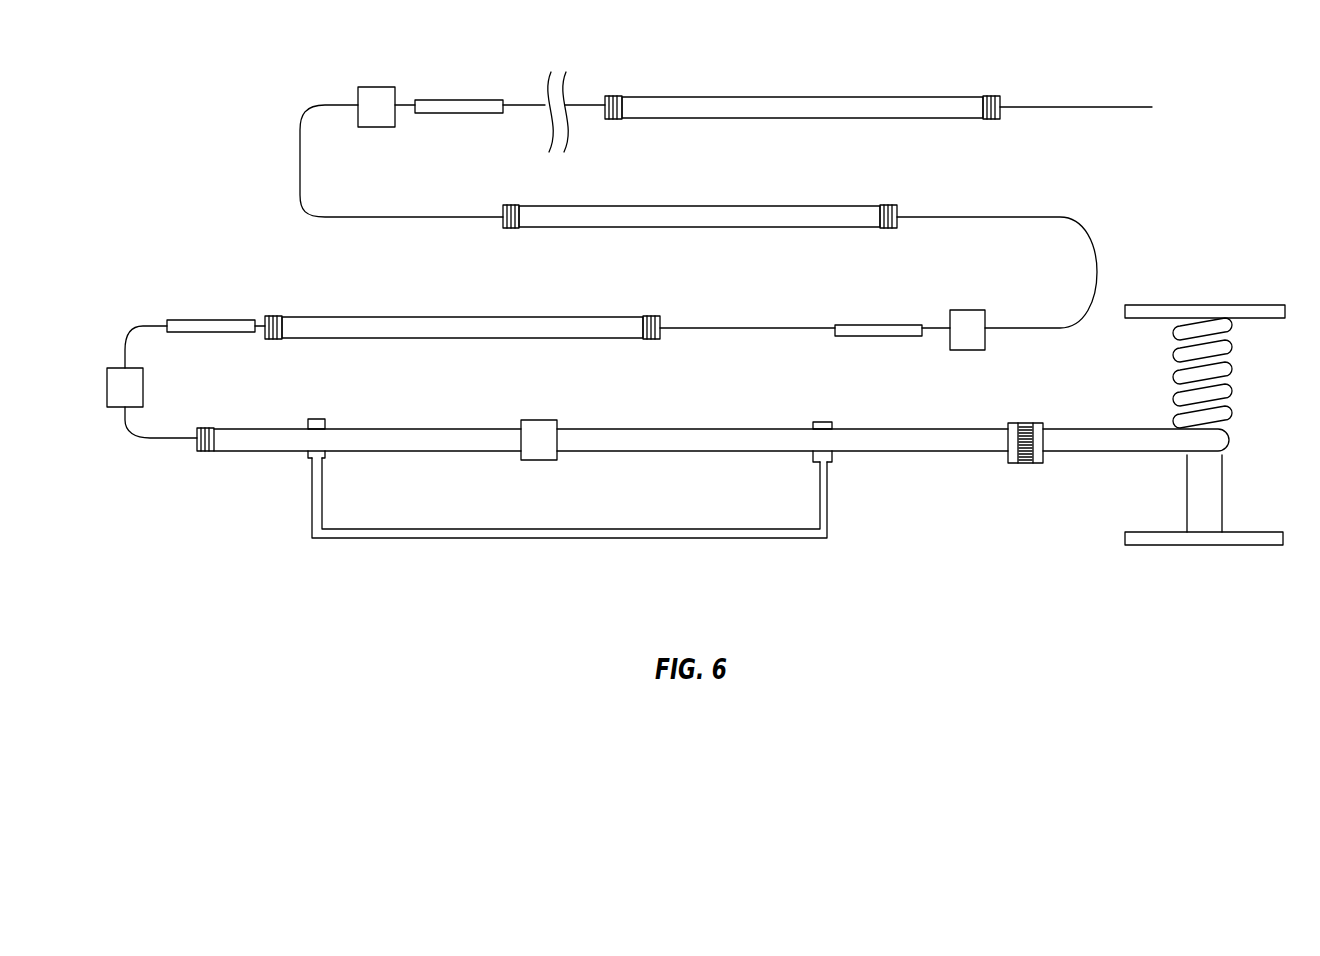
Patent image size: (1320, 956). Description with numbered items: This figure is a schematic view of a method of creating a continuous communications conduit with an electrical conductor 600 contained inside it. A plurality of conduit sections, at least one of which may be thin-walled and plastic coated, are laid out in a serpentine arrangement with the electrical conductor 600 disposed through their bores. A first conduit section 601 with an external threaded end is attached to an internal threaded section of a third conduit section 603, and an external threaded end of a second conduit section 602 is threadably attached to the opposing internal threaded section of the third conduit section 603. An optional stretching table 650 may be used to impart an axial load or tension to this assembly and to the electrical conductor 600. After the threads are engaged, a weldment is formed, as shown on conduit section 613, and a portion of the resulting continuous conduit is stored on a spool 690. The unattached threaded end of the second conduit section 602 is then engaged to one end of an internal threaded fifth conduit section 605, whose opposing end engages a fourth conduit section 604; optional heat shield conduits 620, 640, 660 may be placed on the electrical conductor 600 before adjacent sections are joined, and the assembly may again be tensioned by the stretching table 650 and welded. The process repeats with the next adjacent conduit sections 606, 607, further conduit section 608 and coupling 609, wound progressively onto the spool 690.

The electrical conductor 600 is at (1105, 107).
The first conduit section 601 is at (855, 429).
The second conduit section 602 is at (390, 429).
The third conduit section 603 is at (555, 420).
The fourth conduit section 604 is at (510, 317).
The fifth conduit section 605 is at (143, 397).
The conduit section 606 is at (703, 206).
The conduit section 607 is at (968, 310).
The conduit section 608 is at (890, 97).
The fiber connector / coupler 609 is at (372, 87).
The conduit section 613 is at (1027, 423).
The heat shield conduit 620 is at (222, 320).
The heat shield conduit 640 is at (855, 325).
The stretching table 650 is at (794, 568).
The heat shield conduit 660 is at (463, 100).
The spool 690 is at (1222, 286).